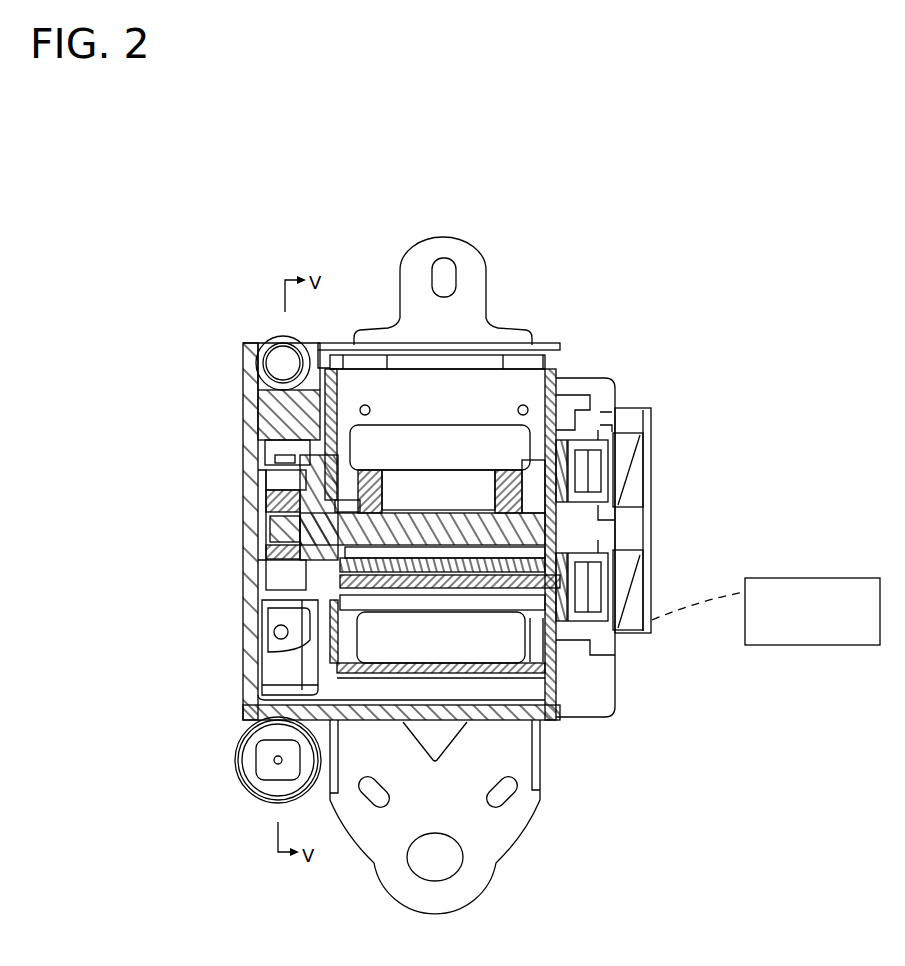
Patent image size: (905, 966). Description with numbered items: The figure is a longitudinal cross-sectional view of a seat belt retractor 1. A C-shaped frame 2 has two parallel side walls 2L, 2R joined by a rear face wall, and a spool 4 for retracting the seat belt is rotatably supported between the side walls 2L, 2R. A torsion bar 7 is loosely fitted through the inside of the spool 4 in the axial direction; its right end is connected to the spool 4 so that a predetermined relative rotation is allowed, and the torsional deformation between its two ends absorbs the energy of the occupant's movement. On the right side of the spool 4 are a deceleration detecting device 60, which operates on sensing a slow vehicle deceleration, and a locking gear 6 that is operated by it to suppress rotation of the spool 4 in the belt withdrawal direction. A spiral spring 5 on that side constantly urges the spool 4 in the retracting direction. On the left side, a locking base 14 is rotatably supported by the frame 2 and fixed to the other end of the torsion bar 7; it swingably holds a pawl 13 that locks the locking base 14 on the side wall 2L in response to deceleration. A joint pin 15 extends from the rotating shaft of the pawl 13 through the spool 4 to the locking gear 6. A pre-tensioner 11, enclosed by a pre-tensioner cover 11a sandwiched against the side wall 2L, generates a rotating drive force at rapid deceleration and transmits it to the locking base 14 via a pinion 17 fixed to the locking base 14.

The seat belt retractor 1 is at (641, 263).
The frame 2 is at (549, 735).
The side wall 2L is at (365, 345).
The side wall 2R is at (597, 378).
The spool 4 is at (507, 470).
The spiral spring 5 is at (638, 470).
The locking gear 6 is at (598, 578).
The torsion bar 7 is at (440, 530).
The pre-tensioner 11 is at (238, 803).
The pre-tensioner cover 11a is at (250, 358).
The pawl 13 is at (268, 605).
The locking base 14 is at (362, 470).
The joint pin 15 is at (438, 590).
The pinion 17 is at (245, 485).
The deceleration detecting device 60 is at (823, 623).